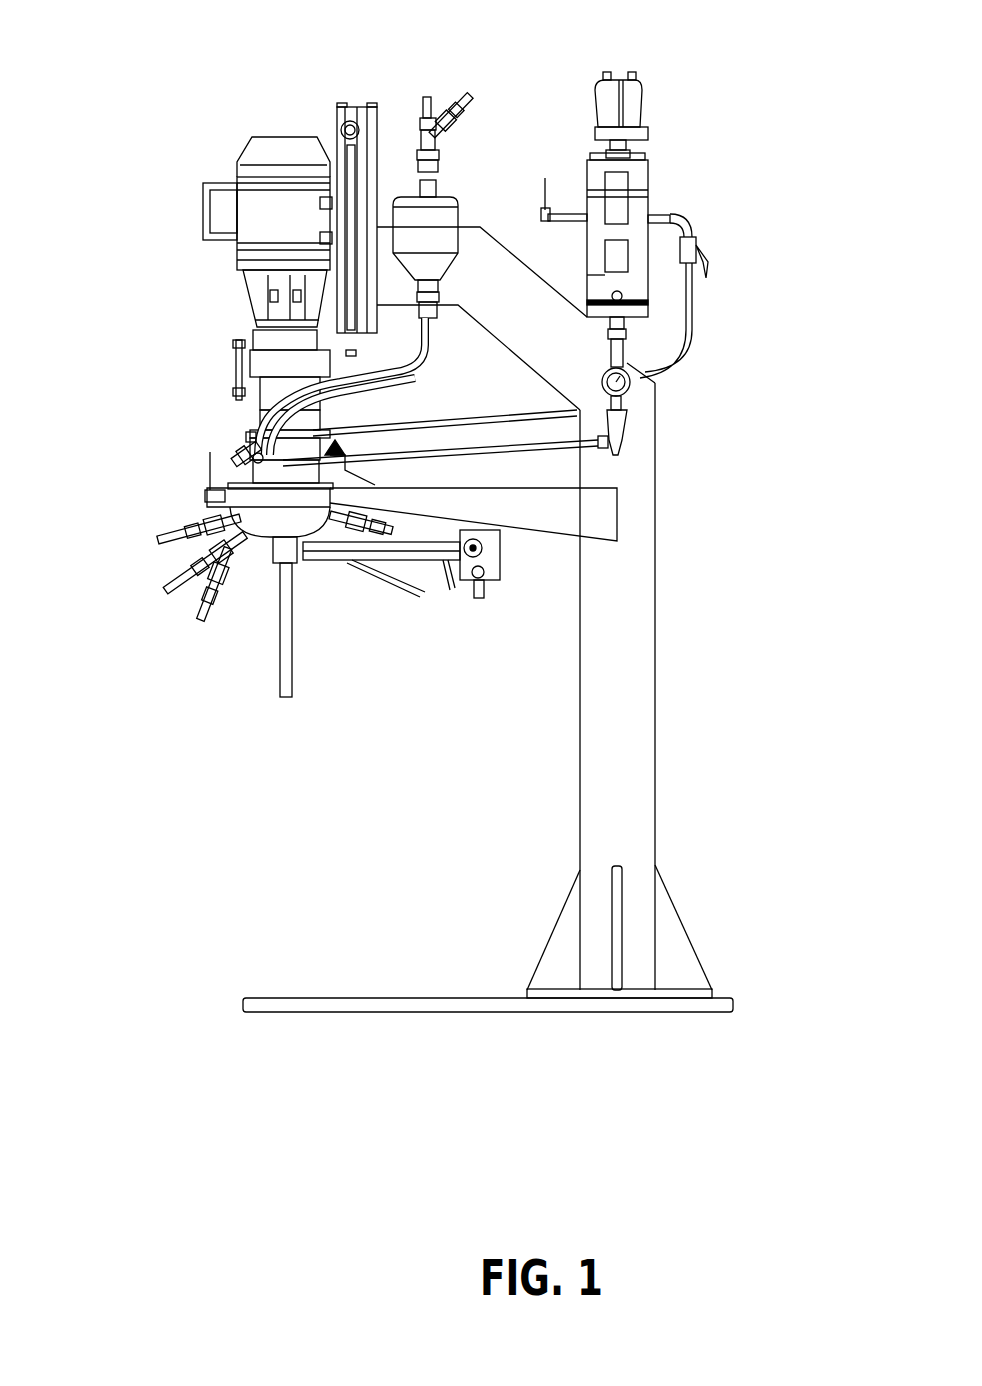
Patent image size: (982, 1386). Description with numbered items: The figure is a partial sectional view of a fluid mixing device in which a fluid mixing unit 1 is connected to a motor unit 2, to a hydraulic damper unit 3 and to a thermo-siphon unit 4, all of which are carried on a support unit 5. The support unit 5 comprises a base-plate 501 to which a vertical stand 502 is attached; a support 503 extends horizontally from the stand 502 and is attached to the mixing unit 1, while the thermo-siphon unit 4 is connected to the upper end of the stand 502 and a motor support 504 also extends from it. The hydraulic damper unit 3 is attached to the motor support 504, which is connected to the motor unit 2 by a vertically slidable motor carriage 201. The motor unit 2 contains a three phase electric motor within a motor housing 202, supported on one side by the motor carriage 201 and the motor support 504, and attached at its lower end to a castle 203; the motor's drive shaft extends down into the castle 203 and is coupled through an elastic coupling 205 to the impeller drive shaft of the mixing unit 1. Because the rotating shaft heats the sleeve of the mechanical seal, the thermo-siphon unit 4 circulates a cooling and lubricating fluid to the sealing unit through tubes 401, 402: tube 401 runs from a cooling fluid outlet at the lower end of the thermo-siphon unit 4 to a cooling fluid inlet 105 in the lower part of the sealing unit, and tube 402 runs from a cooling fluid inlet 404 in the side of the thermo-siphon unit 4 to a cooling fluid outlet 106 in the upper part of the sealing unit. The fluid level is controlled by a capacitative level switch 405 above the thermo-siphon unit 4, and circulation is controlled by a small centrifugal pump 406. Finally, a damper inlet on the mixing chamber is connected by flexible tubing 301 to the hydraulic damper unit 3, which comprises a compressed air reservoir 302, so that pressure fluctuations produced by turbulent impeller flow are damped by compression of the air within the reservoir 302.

The fluid mixing unit 1 is at (296, 544).
The motor unit 2 is at (243, 252).
The hydraulic damper unit 3 is at (404, 229).
The thermo-siphon unit 4 is at (537, 283).
The support unit 5 is at (546, 570).
The cooling fluid inlet 105 is at (240, 450).
The cooling fluid outlet 106 is at (255, 434).
The motor carriage 201 is at (345, 112).
The motor housing 202 is at (235, 170).
The castle 203 is at (255, 290).
The elastic coupling 205 is at (260, 345).
The flexible tubing 301 is at (428, 337).
The compressed air reservoir 302 is at (445, 213).
The tube 401 is at (563, 443).
The tube 402 is at (365, 430).
The cooling fluid inlet 404 is at (670, 222).
The capacitative level switch 405 is at (640, 105).
The centrifugal pump 406 is at (640, 375).
The base-plate 501 is at (412, 1000).
The vertical stand 502 is at (632, 740).
The support 503 is at (557, 520).
The motor support 504 is at (497, 262).